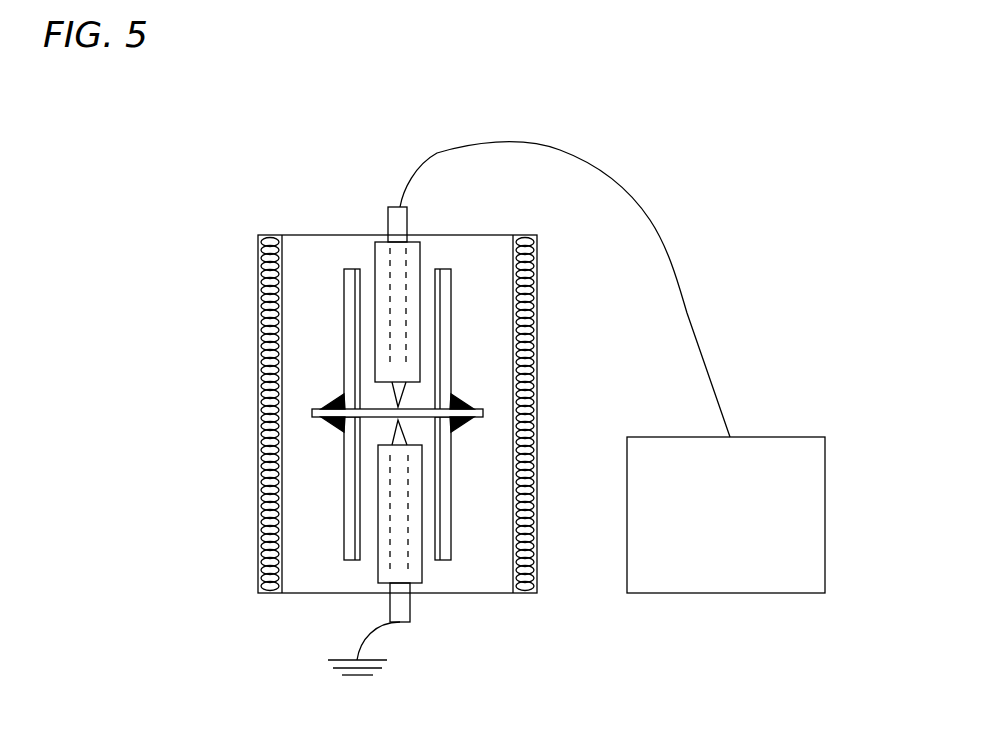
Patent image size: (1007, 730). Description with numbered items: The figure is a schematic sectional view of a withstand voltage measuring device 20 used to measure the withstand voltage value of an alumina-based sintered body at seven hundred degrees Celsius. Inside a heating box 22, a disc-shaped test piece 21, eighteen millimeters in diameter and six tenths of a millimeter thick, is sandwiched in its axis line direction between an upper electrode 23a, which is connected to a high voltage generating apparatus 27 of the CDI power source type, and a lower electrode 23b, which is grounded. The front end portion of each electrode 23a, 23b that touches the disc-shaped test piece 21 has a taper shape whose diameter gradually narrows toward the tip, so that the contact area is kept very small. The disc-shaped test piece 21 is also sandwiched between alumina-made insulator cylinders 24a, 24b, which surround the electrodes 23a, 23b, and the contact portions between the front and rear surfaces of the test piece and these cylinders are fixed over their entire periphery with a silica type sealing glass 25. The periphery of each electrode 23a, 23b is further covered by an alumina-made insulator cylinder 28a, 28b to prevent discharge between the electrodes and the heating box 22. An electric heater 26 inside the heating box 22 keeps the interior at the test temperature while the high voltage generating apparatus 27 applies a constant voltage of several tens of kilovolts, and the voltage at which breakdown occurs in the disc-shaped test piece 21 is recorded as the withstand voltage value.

The withstand voltage measuring device 20 is at (293, 163).
The disc-shaped test piece 21 is at (483, 413).
The heating box 22 is at (518, 600).
The electrode 23a is at (391, 222).
The electrode 23b is at (397, 608).
The alumina-made insulator cylinder 24a is at (347, 290).
The alumina-made insulator cylinder 24b is at (347, 555).
The sealing glass 25 is at (330, 400).
The electric heater 26 is at (257, 300).
The high voltage generating apparatus 27 is at (693, 570).
The alumina-made insulator cylinder 28a is at (418, 250).
The alumina-made insulator cylinder 28b is at (415, 573).